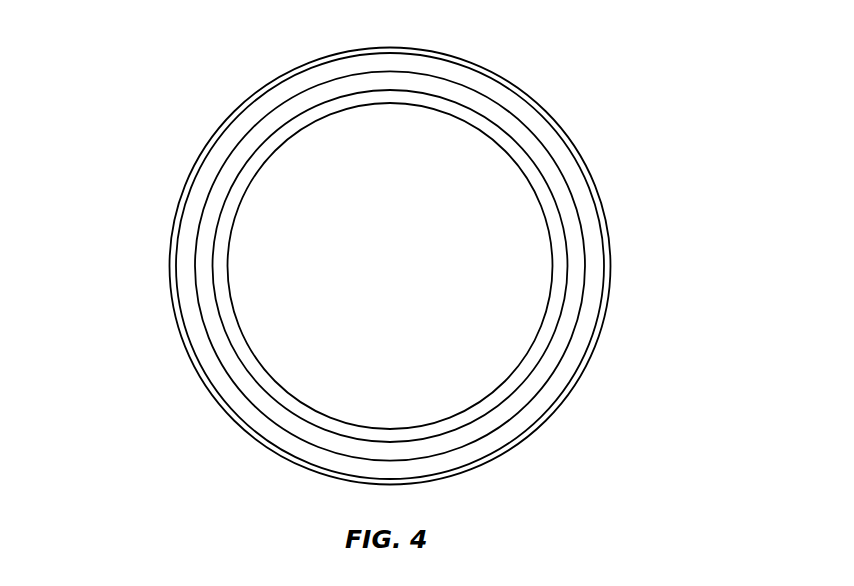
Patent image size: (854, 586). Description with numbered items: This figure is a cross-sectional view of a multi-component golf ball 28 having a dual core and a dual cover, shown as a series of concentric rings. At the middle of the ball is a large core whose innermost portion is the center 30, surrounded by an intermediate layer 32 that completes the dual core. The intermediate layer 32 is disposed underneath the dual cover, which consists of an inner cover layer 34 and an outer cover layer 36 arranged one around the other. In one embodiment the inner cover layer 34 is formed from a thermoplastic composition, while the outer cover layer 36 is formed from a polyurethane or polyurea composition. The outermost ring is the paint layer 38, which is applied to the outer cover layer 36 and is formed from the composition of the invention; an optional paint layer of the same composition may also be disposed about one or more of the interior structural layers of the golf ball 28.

The golf ball 28 is at (156, 96).
The center 30 is at (507, 388).
The intermediate layer 32 is at (520, 133).
The inner cover layer 34 is at (593, 263).
The outer cover layer 36 is at (169, 267).
The paint layer 38 is at (199, 385).